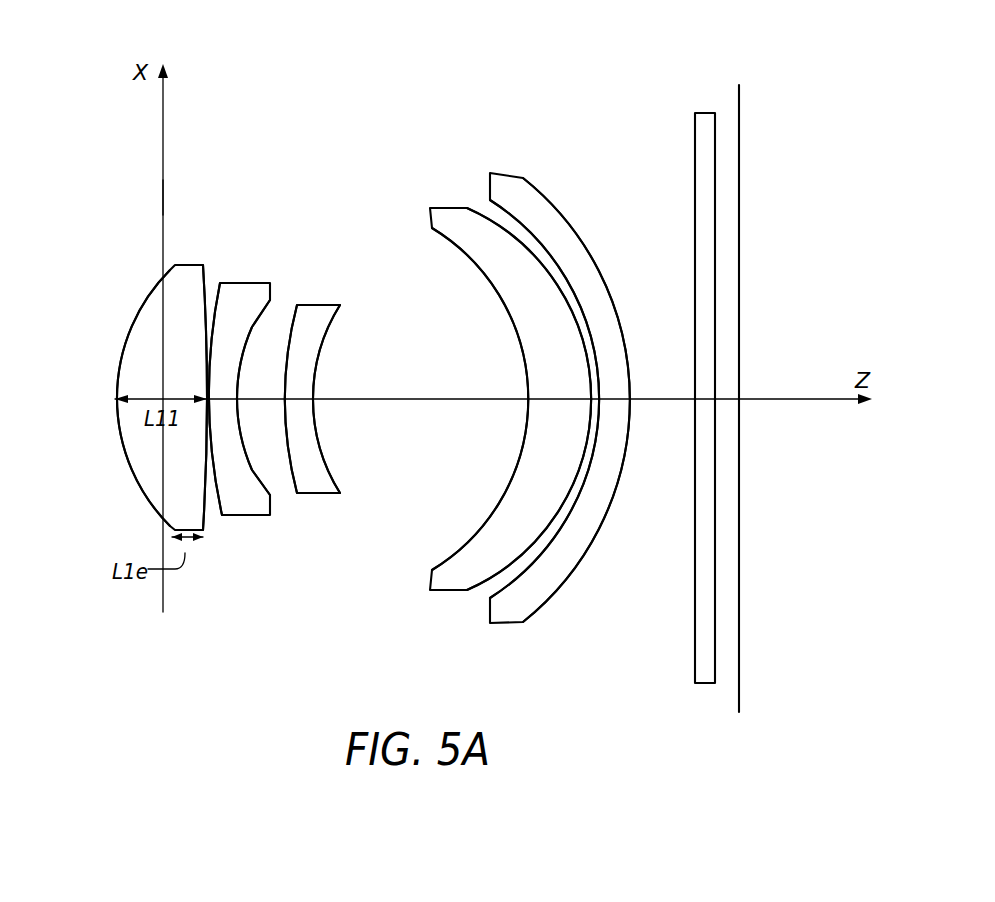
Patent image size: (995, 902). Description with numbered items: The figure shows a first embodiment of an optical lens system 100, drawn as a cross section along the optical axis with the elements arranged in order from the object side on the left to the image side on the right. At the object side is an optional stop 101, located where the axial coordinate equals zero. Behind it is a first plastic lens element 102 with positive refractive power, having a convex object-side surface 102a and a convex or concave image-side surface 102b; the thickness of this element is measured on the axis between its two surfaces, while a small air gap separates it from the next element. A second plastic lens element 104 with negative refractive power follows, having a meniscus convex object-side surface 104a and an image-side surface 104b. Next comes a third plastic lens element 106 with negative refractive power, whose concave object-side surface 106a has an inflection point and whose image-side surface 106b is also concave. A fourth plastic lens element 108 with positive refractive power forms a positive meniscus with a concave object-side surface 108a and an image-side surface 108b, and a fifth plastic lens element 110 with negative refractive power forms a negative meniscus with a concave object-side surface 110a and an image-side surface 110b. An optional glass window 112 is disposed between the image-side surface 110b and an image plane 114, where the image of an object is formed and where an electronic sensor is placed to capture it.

The optical lens system 100 is at (816, 59).
The stop 101 is at (163, 200).
The first plastic lens element 102 is at (188, 264).
The object-side surface of first lens element 102a is at (118, 442).
The image-side surface of first lens element 102b is at (203, 540).
The second plastic lens element 104 is at (243, 288).
The object-side surface of second lens element 104a is at (213, 532).
The image-side surface of second lens element 104b is at (253, 473).
The third plastic lens element 106 is at (318, 307).
The object-side surface of third lens element 106a is at (281, 333).
The image-side surface of third lens element 106b is at (318, 437).
The fourth plastic lens element 108 is at (430, 213).
The object-side surface of fourth lens element 108a is at (480, 272).
The image-side surface of fourth lens element 108b is at (487, 573).
The fifth plastic lens element 110 is at (517, 182).
The object-side surface of fifth lens element 110a is at (493, 220).
The image-side surface of fifth lens element 110b is at (580, 563).
The glass window 112 is at (695, 158).
The image plane 114 is at (739, 162).